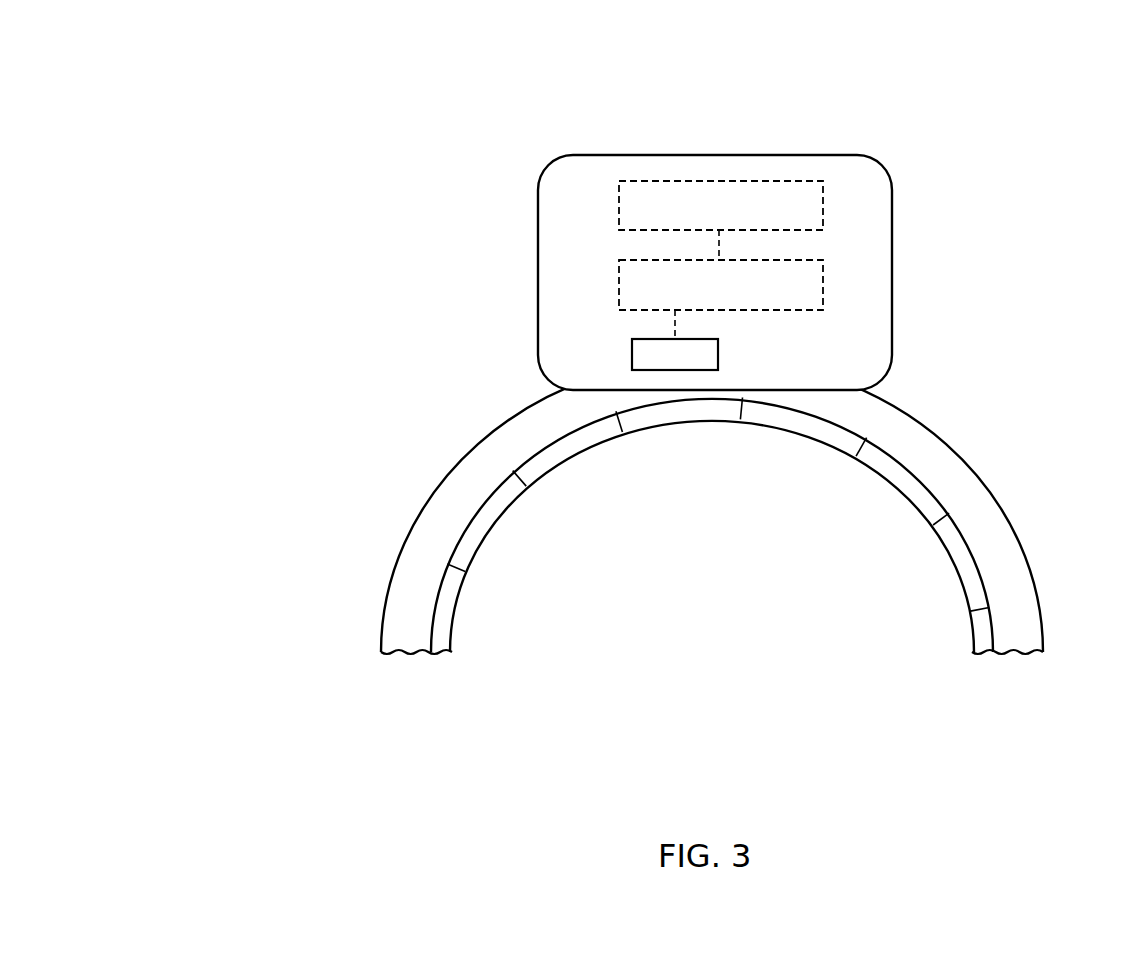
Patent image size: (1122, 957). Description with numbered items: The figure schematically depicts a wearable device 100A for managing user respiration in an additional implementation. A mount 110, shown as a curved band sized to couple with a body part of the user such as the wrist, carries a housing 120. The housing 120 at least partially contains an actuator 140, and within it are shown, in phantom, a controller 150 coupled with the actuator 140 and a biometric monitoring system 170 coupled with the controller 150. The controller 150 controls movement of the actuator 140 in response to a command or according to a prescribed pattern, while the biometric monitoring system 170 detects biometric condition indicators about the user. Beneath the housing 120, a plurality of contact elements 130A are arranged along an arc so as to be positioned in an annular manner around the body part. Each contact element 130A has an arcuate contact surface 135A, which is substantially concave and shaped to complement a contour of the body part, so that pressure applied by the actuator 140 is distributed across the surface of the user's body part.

The wearable device 100A is at (343, 125).
The mount 110 is at (393, 595).
The housing 120 is at (515, 248).
The contact element 130A is at (478, 498).
The arcuate contact surface 135A is at (495, 537).
The actuator 140 is at (642, 357).
The controller 150 is at (807, 299).
The biometric monitoring system 170 is at (774, 221).